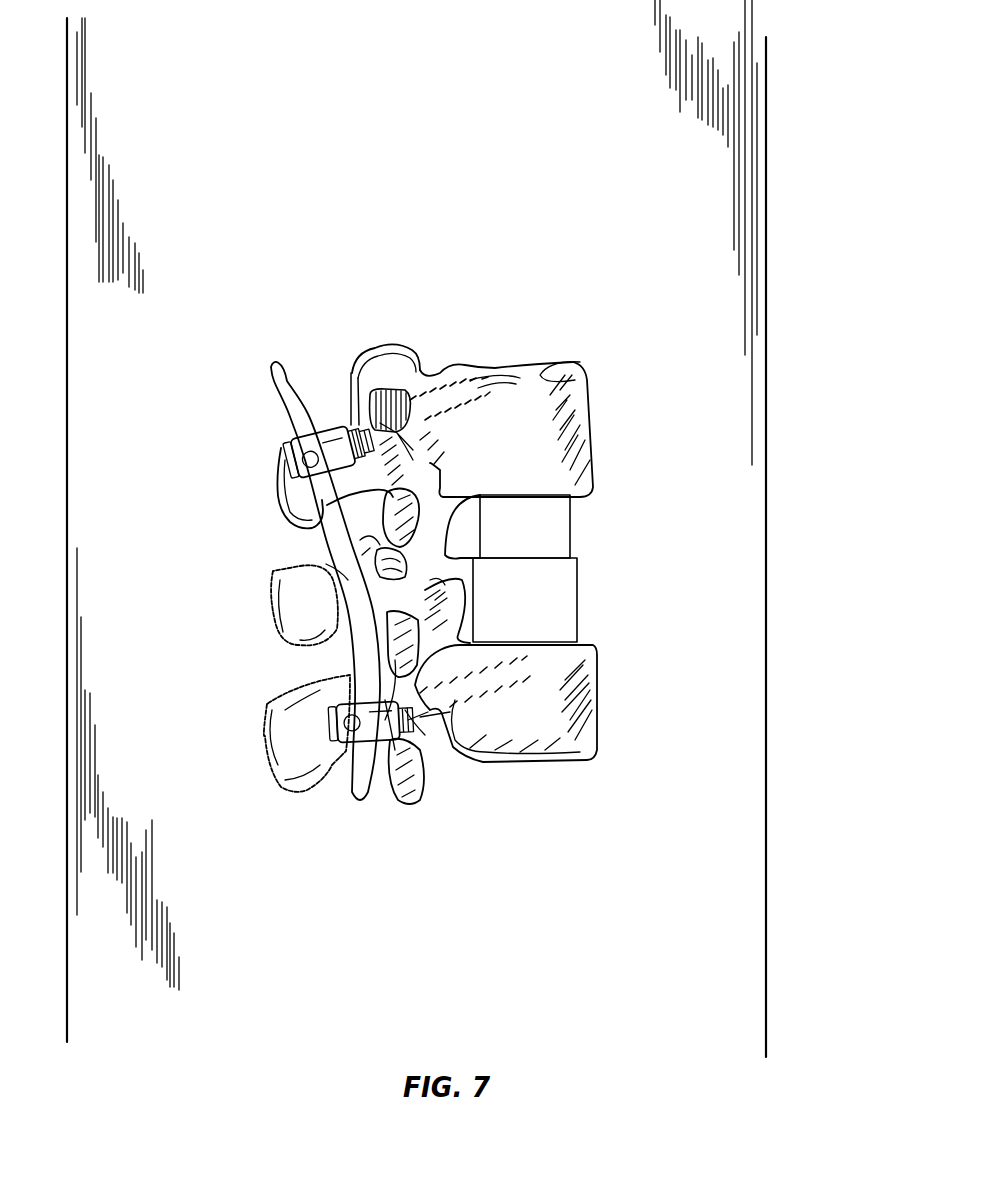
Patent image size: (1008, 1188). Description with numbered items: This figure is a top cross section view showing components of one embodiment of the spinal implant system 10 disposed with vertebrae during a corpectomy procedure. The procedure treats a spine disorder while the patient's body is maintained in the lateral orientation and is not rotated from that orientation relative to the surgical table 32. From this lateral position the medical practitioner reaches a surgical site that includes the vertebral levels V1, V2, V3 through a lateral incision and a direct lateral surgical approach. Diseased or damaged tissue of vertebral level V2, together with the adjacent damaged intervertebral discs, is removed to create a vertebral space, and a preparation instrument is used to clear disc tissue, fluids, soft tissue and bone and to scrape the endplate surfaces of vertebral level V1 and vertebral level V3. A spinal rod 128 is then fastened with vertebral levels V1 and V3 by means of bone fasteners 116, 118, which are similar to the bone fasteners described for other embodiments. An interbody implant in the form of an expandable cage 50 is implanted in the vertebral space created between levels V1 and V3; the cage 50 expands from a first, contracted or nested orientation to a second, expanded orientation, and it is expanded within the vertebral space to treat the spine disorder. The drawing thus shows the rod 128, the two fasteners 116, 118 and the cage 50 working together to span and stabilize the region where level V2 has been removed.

The spinal implant system 10 is at (292, 581).
The surgical table 32 is at (766, 952).
The expandable cage 50 is at (561, 580).
The bone fastener 116 is at (352, 373).
The bone fastener 118 is at (408, 715).
The spinal rod 128 is at (355, 584).
The vertebral level V1 is at (503, 388).
The vertebral level V2 is at (467, 525).
The vertebral level V3 is at (568, 668).